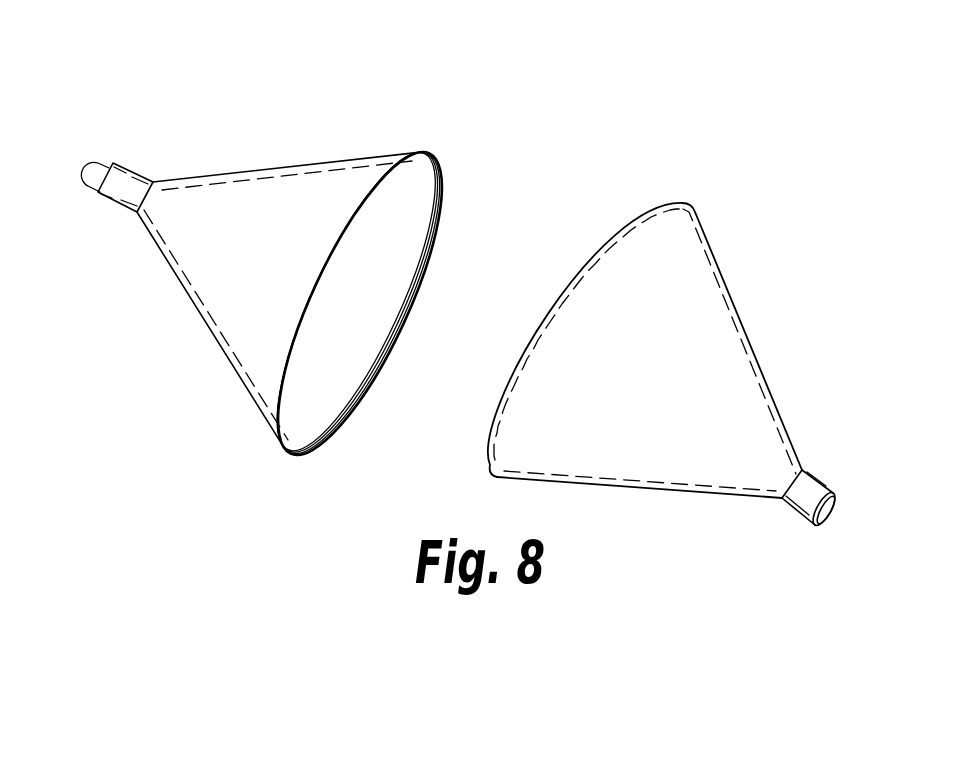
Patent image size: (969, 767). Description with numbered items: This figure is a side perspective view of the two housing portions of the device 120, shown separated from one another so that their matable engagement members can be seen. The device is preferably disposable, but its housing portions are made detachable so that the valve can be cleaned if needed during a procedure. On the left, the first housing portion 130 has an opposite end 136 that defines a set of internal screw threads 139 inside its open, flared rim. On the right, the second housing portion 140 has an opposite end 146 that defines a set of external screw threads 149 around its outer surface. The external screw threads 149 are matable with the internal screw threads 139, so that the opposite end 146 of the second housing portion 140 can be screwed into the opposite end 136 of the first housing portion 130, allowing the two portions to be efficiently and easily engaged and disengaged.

The device 120 is at (593, 102).
The first housing portion 130 is at (277, 153).
The opposite end of first housing portion 136 is at (433, 157).
The internal screw threads 139 is at (338, 422).
The second housing portion 140 is at (777, 312).
The opposite end of second housing portion 146 is at (697, 211).
The external screw threads 149 is at (613, 237).